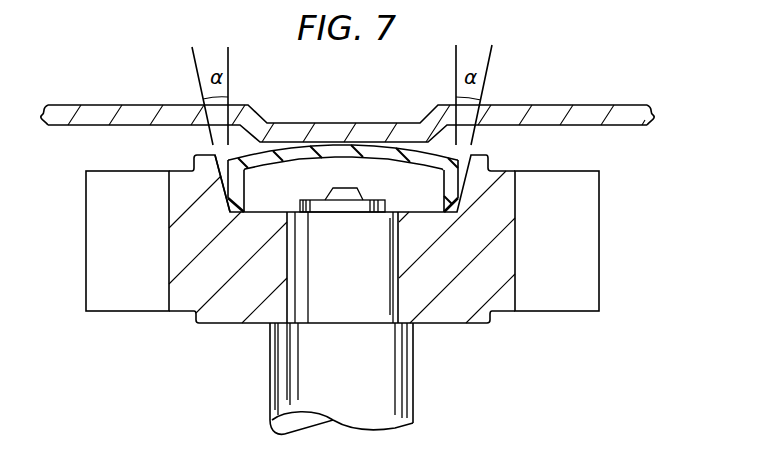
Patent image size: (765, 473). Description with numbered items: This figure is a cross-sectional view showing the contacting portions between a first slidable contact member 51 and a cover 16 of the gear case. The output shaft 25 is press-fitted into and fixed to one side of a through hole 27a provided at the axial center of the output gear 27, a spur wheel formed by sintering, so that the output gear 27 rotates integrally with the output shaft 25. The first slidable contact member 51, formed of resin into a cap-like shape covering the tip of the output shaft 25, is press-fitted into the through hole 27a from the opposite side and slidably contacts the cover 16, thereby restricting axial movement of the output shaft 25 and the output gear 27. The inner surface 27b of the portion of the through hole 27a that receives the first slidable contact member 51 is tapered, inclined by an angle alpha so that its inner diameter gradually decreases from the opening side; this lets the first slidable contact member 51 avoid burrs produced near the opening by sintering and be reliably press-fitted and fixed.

The cover 16 is at (576, 98).
The output shaft 25 is at (303, 378).
The output gear 27 is at (611, 212).
The through hole 27a is at (399, 262).
The inner surface 27b is at (220, 167).
The first slidable contact member 51 is at (430, 143).